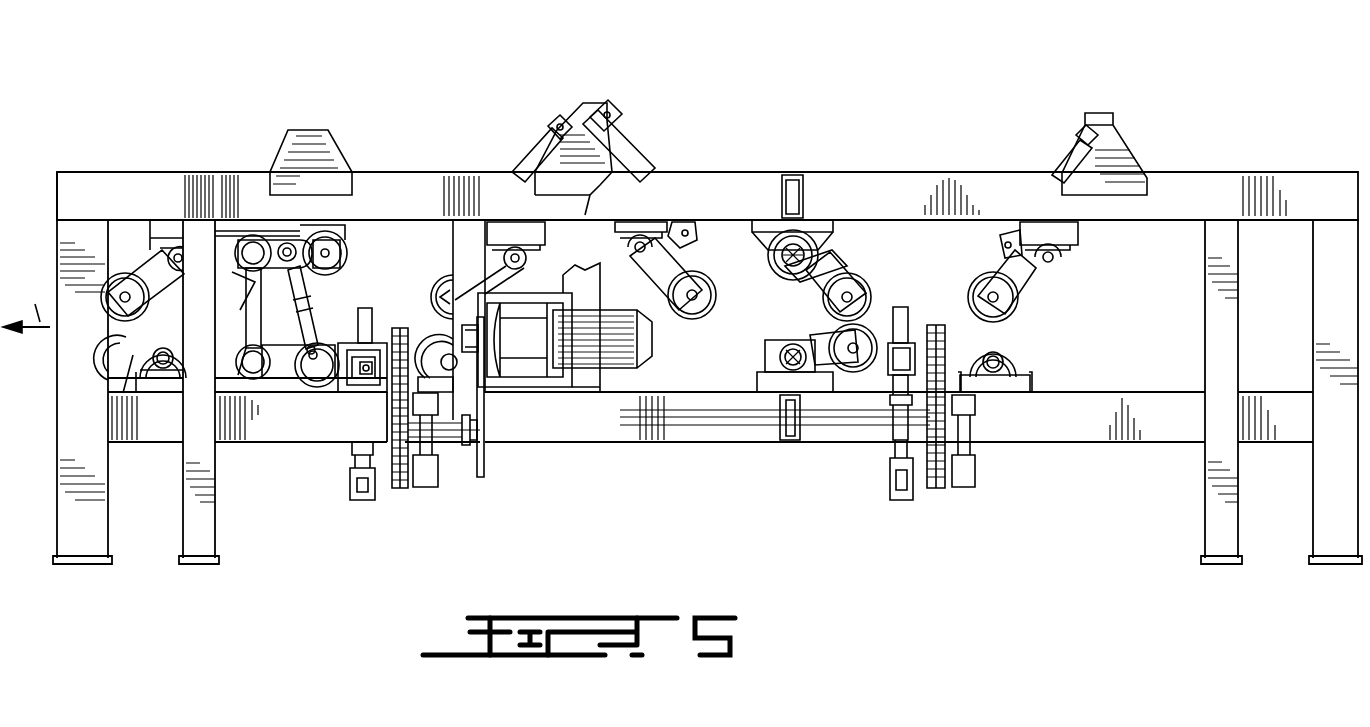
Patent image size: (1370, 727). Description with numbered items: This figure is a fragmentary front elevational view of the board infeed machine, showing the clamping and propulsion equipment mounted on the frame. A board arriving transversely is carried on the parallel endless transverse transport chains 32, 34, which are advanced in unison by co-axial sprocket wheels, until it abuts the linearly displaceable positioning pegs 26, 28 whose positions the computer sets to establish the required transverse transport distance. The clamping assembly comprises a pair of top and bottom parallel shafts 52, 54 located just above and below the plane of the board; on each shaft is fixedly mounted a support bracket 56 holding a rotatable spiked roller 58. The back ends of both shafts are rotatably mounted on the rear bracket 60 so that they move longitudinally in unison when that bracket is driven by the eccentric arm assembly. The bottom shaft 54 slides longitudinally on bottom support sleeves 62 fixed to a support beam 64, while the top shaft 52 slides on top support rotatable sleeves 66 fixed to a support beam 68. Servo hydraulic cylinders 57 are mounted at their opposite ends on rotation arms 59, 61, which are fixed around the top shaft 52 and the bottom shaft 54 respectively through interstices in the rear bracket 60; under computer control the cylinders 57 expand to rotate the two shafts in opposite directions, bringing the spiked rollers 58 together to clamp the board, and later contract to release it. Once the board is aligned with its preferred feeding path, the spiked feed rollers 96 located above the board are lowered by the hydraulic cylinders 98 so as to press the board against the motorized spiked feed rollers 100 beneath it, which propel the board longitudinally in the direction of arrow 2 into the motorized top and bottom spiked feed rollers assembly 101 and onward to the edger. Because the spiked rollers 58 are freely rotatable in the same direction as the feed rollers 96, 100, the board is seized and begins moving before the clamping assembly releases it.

The arrow 2 is at (26, 304).
The positioning peg 26 is at (373, 322).
The positioning peg 28 is at (908, 322).
The transverse transport chain 32 is at (400, 490).
The transverse transport chain 34 is at (940, 490).
The top shaft 52 is at (252, 236).
The bottom shaft 54 is at (255, 380).
The support bracket 56 is at (328, 240).
The hydraulic cylinder 57 is at (300, 310).
The spiked roller 58 is at (338, 250).
The rotation arm 59 is at (289, 244).
The rear bracket 60 is at (245, 285).
The rotation arm 61 is at (288, 420).
The bottom support sleeve 62 is at (292, 372).
The support beam 64 is at (282, 400).
The top support rotatable sleeve 66 is at (282, 245).
The support beam 68 is at (748, 185).
The spiked feed roller 96 is at (445, 282).
The hydraulic cylinder 98 is at (640, 170).
The motorized spiked feed roller 100 is at (1020, 360).
The motorized top and bottom spiked feed rollers assembly 101 is at (145, 395).